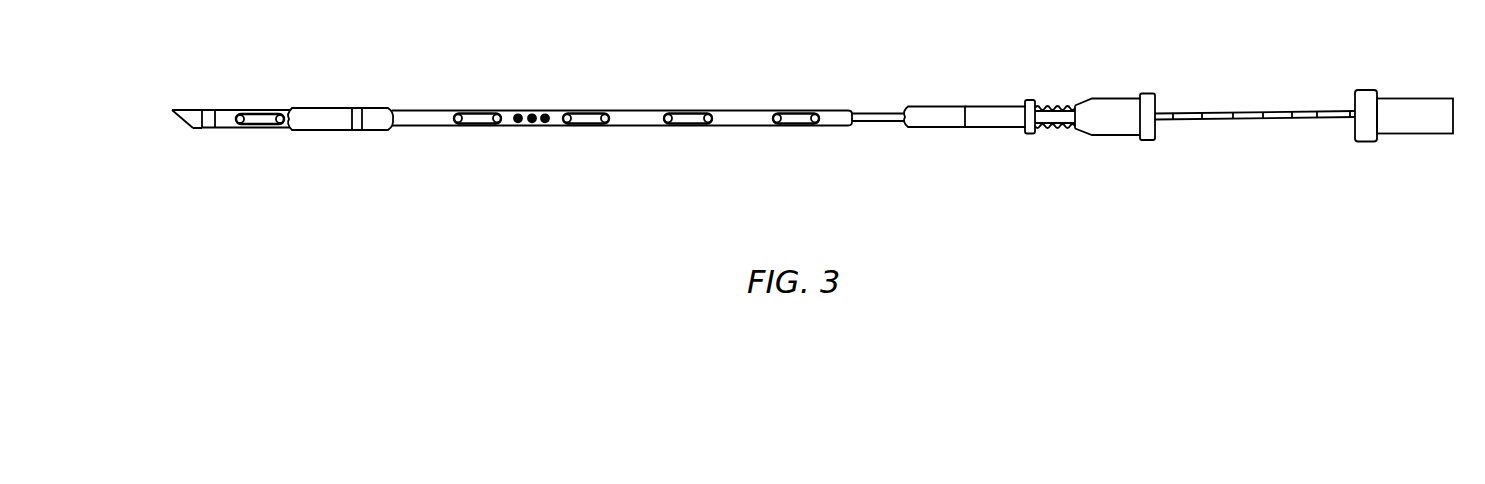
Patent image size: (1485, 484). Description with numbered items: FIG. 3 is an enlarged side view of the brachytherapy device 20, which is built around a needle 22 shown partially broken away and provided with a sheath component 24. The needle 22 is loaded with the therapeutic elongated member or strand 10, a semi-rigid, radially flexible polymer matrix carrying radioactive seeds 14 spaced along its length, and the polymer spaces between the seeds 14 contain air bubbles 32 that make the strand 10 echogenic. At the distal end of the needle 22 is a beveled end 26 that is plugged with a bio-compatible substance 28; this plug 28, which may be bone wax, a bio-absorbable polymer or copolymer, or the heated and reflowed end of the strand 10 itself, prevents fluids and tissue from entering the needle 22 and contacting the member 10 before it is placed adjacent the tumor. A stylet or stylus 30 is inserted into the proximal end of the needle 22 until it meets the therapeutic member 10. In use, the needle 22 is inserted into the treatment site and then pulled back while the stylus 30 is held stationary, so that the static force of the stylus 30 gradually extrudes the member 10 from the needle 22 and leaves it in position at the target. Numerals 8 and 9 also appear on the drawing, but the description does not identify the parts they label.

The proximal sheath segment 8 is at (321, 108).
The catheter body 9 is at (622, 115).
The therapeutic elongated member 10 is at (792, 143).
The radioactive seeds 14 is at (477, 120).
The brachytherapy device 20 is at (1027, 134).
The needle 22 is at (765, 106).
The sheath component 24 is at (952, 105).
The beveled end 26 is at (190, 146).
The bio-compatible plug 28 is at (173, 112).
The stylet 30 is at (1260, 118).
The air bubbles 32 is at (530, 110).